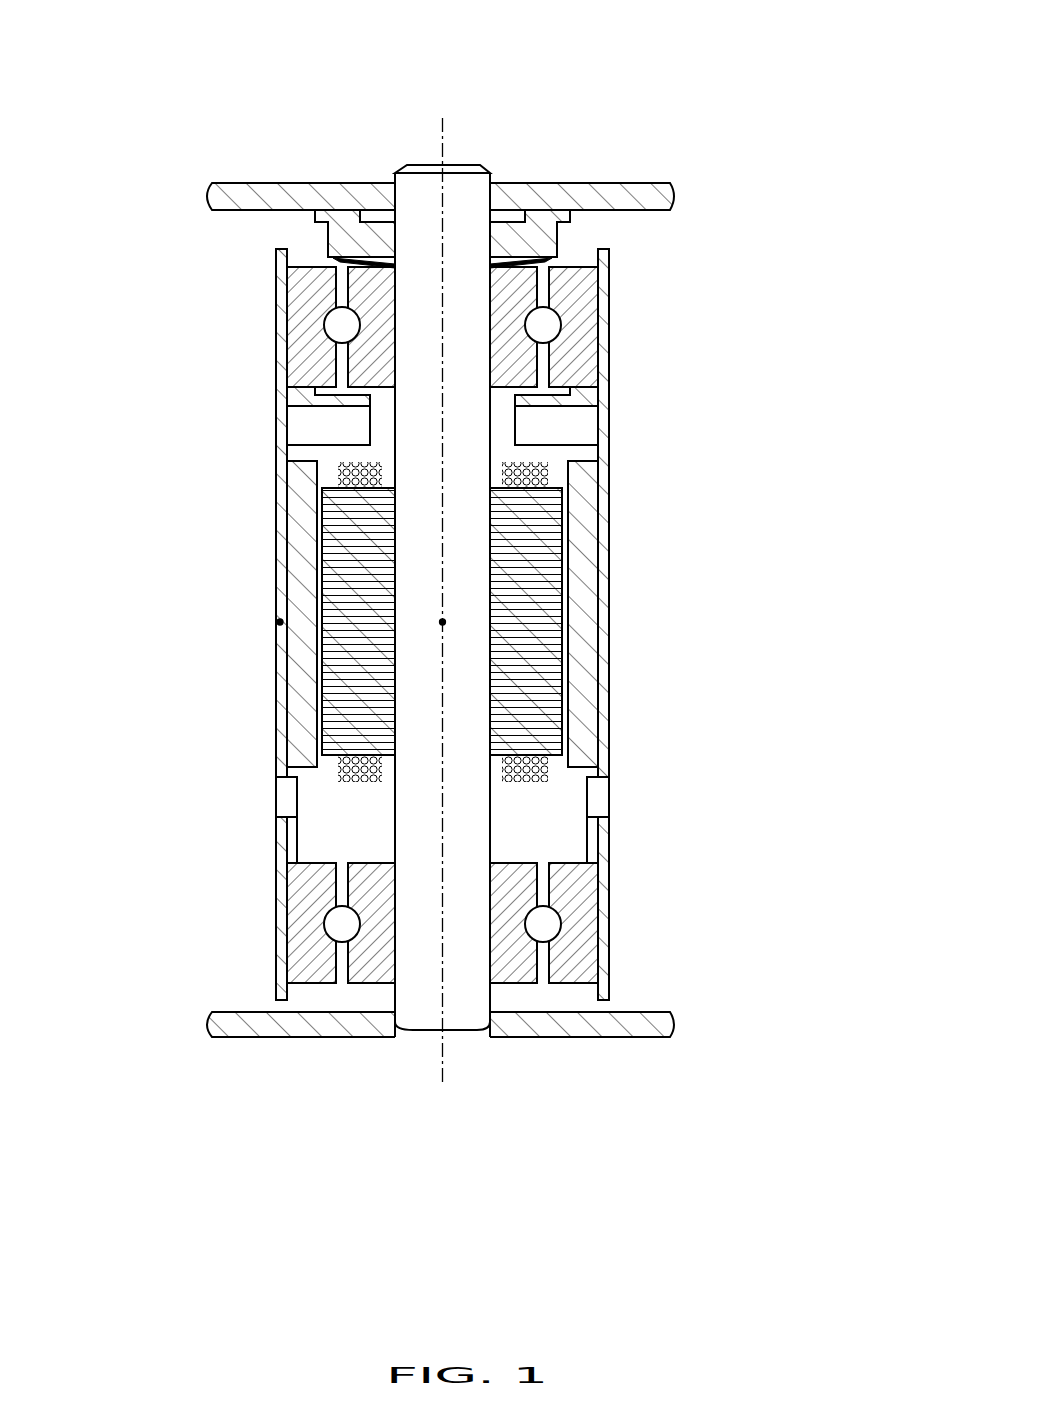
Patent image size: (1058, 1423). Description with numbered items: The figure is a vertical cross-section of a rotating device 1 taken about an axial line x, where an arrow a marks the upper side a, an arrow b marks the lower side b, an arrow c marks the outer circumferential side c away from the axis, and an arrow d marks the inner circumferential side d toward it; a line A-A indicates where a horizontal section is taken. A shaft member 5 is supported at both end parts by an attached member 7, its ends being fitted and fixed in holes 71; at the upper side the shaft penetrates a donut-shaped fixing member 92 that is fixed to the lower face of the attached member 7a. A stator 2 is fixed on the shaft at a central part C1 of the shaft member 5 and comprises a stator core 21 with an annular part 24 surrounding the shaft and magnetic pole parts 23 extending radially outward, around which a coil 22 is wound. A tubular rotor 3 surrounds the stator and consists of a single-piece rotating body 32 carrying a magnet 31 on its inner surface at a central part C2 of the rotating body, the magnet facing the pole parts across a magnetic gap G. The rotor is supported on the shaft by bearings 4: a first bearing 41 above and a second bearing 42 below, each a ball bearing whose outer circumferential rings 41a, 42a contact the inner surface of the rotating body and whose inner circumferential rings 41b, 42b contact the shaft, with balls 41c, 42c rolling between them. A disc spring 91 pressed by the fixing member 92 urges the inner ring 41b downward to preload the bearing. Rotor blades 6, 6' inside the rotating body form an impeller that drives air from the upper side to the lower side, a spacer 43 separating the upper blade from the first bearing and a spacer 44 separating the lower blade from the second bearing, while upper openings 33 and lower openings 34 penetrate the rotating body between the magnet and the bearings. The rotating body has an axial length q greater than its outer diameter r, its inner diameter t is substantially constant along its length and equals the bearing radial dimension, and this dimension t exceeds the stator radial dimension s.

The rotating device 1 is at (790, 182).
The stator 2 is at (543, 626).
The rotor 3 is at (459, 624).
The bearing 4 is at (534, 625).
The shaft member 5 is at (468, 166).
The rotor blade 6 is at (443, 469).
The rotor blade 6' is at (439, 837).
The attached member 7 is at (637, 1032).
The attached member 7a is at (630, 194).
The stator core 21 is at (529, 623).
The coil 22 is at (598, 790).
The magnetic pole part 23 is at (560, 704).
The annular part 24 is at (520, 712).
The magnet 31 is at (592, 575).
The rotating body 32 is at (604, 538).
The upper opening 33 is at (296, 428).
The lower opening 34 is at (292, 795).
The first bearing 41 is at (519, 327).
The outer circumferential ring 41a is at (590, 330).
The inner circumferential ring 41b is at (522, 295).
The ball 41c is at (550, 333).
The second bearing 42 is at (519, 923).
The outer circumferential ring 42a is at (590, 926).
The inner circumferential ring 42b is at (522, 892).
The ball 42c is at (550, 930).
The spacer 43 is at (300, 397).
The spacer 44 is at (292, 848).
The hole 71 is at (492, 180).
The disc spring 91 is at (338, 266).
The fixing member 92 is at (345, 212).
The magnetic gap G is at (565, 495).
The central part C1 is at (442, 625).
The central part C2 is at (280, 623).
The axial line x is at (428, 196).
The upper side a is at (430, 72).
The lower side b is at (430, 1063).
The outer circumferential side c is at (288, 47).
The inner circumferential side d is at (315, 47).
The line A- A is at (268, 608).
The length in the axial line direction q is at (276, 249).
The outer diameter r is at (276, 1040).
The radial dimension s is at (323, 760).
The inner diameter t is at (287, 1040).